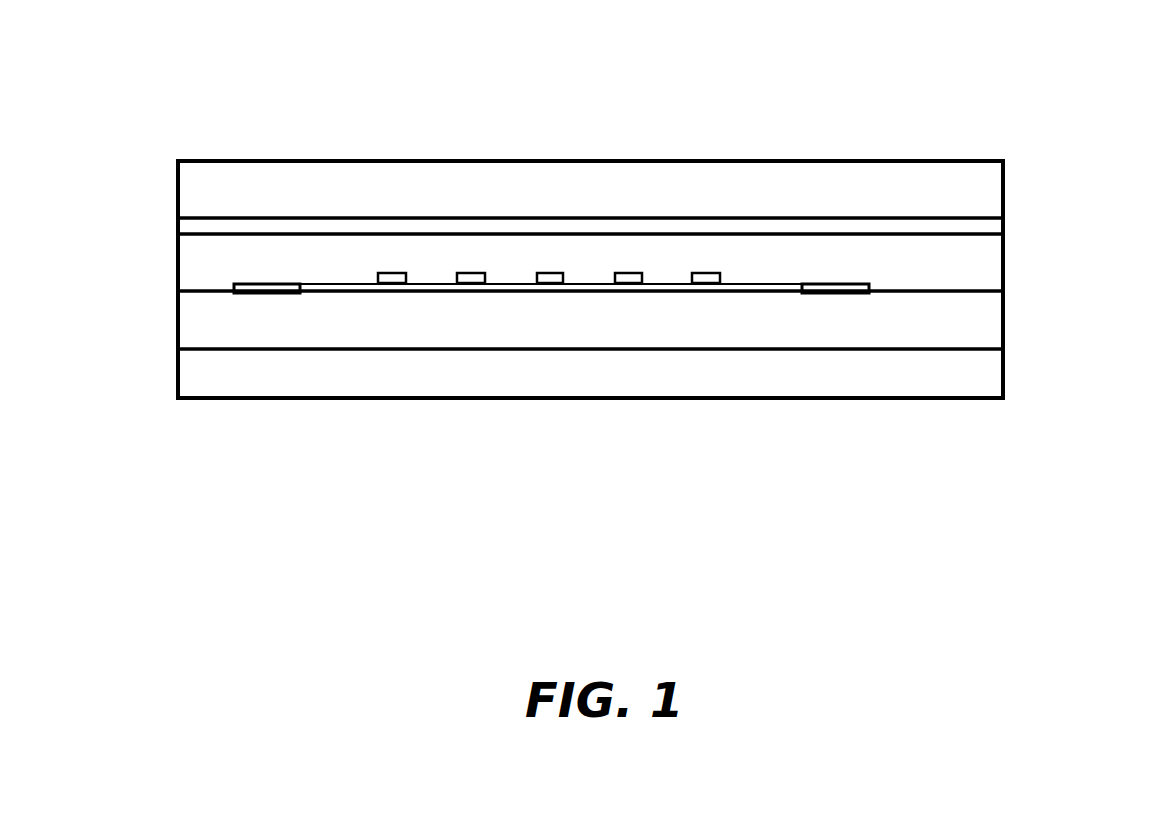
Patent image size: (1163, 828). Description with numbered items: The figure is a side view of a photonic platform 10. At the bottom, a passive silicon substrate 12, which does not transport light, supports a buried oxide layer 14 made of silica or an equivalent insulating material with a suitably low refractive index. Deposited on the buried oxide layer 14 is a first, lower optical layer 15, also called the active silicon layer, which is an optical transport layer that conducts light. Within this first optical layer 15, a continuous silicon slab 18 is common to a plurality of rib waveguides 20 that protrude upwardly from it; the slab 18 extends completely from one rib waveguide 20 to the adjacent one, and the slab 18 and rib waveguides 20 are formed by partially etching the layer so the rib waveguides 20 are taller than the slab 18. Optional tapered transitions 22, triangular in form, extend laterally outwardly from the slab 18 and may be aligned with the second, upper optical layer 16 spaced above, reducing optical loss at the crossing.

The photonic platform 10 is at (941, 84).
The silicon substrate 12 is at (195, 380).
The buried oxide layer 14 is at (195, 327).
The first optical layer 15 is at (877, 286).
The second optical layer 16 is at (185, 226).
The silicon slab 18 is at (393, 272).
The rib waveguides 20 is at (592, 283).
The tapered transitions 22 is at (267, 284).